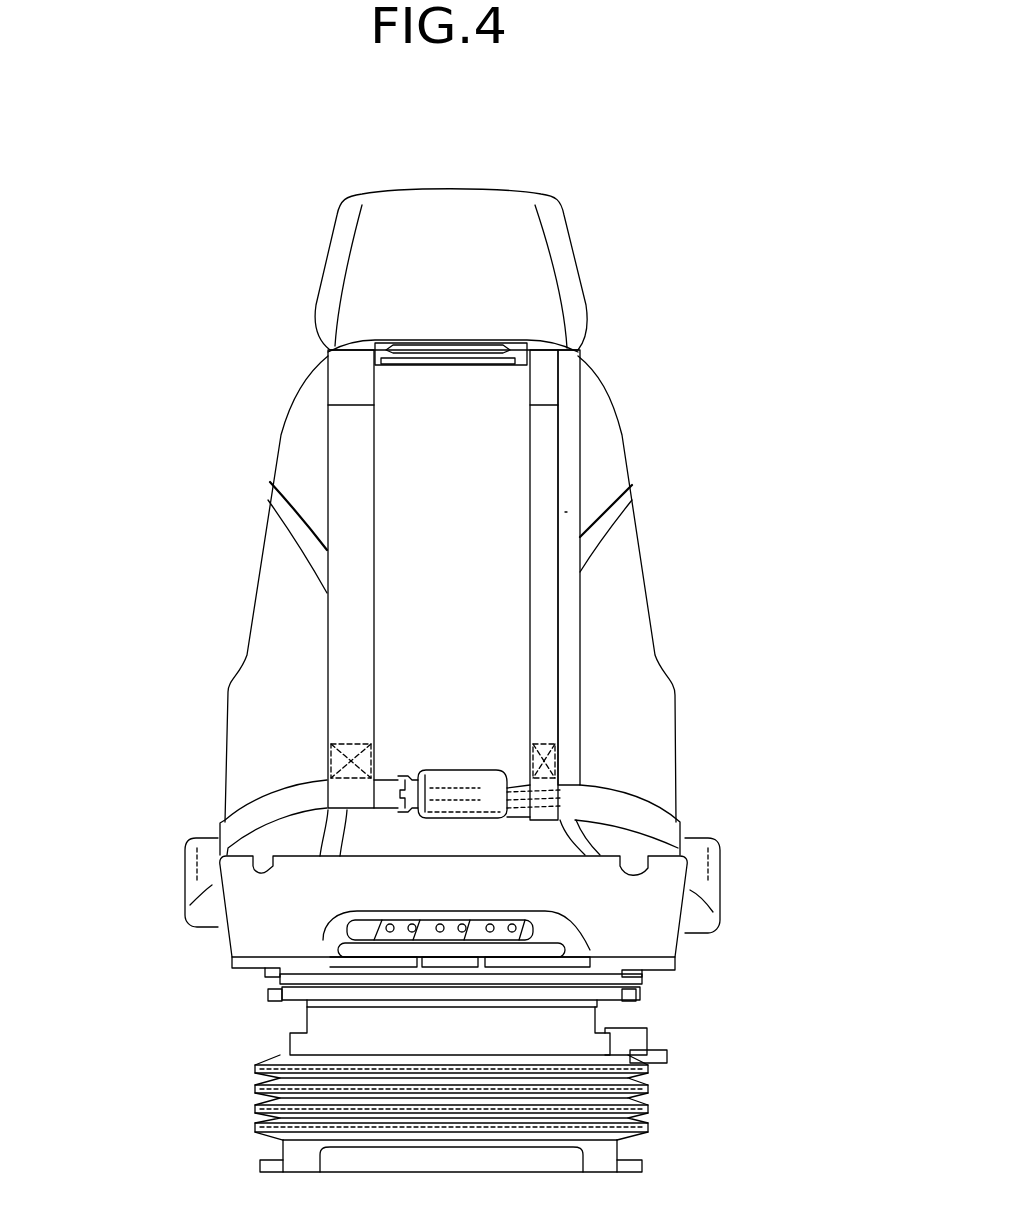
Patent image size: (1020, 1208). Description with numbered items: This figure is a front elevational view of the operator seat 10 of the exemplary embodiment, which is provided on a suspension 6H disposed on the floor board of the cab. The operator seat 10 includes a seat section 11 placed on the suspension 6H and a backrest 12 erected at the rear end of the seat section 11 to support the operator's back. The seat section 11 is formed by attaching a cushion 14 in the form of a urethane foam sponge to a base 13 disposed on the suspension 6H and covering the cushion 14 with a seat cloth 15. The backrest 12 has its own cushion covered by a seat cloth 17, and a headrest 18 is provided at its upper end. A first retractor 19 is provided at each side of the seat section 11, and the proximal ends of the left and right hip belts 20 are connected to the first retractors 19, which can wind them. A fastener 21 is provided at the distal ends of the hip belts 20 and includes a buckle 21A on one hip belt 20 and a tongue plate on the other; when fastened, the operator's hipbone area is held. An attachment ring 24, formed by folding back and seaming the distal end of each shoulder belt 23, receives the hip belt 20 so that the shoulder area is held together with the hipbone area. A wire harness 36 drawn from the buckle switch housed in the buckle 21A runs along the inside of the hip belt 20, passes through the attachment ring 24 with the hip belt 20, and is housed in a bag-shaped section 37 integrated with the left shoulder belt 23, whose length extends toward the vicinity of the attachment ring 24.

The operator seat 10 is at (485, 166).
The seat section 11 is at (248, 920).
The backrest 12 is at (486, 581).
The base 13 is at (597, 975).
The cushion 14 is at (357, 920).
The seat cloth 15 is at (655, 938).
The seat cloth 17 is at (650, 617).
The headrest 18 is at (543, 283).
The first retractor 19 is at (186, 852).
The hip belt 20 is at (232, 812).
The fastener 21 is at (440, 778).
The buckle 21A is at (470, 808).
The shoulder belt 23 is at (345, 455).
The attachment ring 24 is at (365, 790).
The wire harness 36 is at (523, 782).
The bag-shaped section 37 is at (567, 512).
The suspension 6H is at (636, 1090).